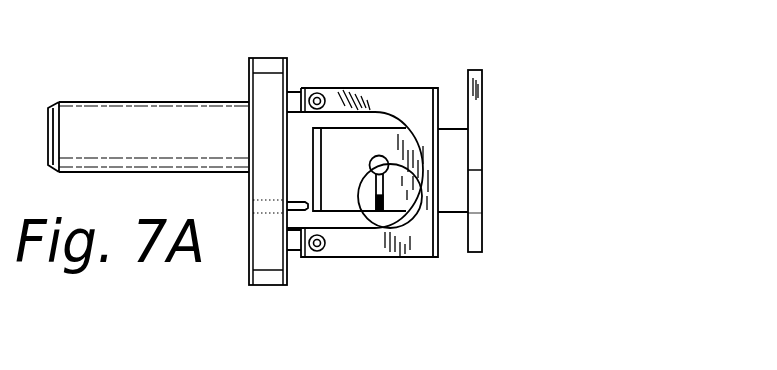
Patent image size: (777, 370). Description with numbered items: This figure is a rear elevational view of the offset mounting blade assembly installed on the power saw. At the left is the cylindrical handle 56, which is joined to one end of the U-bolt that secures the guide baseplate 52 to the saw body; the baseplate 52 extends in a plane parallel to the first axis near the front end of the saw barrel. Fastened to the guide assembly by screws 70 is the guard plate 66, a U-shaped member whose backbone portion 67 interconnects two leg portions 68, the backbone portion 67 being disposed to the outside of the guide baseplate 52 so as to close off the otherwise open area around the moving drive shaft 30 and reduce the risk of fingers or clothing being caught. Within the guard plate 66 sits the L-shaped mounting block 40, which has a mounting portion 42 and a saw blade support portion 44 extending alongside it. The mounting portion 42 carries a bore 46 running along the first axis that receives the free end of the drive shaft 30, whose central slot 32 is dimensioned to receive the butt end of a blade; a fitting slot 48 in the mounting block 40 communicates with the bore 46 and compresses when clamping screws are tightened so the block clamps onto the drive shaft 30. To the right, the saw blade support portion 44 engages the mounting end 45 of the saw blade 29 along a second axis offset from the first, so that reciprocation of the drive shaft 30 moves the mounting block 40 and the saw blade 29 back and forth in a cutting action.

The cylindrical handle 56 is at (170, 150).
The baseplate 52 is at (281, 126).
The screws 70 is at (317, 93).
The leg portions 68 is at (333, 93).
The guard plate 66 is at (397, 97).
The backbone portion 67 is at (436, 90).
The mounting portion 42 is at (353, 160).
The bore 46 is at (371, 168).
The drive shaft 30 is at (378, 172).
The fitting slot 48 is at (382, 214).
The central slot 32 is at (421, 195).
The mounting block 40 is at (473, 204).
The saw blade support portion 44 is at (468, 147).
The mounting end 45 is at (475, 108).
The saw blade 29 is at (480, 230).